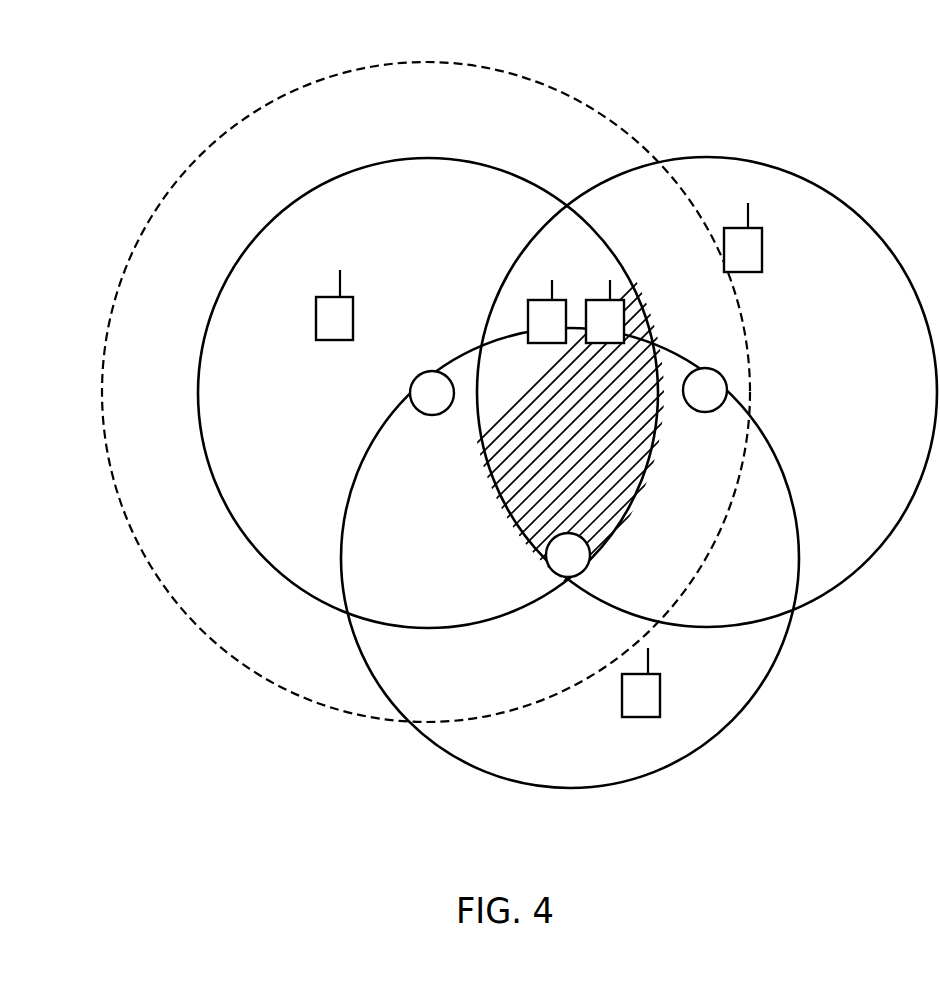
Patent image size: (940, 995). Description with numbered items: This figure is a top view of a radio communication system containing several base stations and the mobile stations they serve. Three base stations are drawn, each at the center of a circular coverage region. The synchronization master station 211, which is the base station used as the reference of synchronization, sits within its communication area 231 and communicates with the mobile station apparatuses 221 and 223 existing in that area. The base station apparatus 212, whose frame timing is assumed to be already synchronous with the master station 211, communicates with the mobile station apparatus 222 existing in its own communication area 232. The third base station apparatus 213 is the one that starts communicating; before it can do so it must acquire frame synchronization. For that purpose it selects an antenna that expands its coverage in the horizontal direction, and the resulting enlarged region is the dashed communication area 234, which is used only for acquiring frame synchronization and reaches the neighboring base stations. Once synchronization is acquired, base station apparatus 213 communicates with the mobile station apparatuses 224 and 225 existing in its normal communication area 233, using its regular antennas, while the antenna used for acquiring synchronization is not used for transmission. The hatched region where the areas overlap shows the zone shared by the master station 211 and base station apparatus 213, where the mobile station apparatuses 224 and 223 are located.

The synchronization master station 211 is at (712, 412).
The base station apparatus 212 is at (546, 566).
The base station apparatus 213 is at (421, 414).
The mobile station apparatus 221 is at (792, 242).
The mobile station apparatus 222 is at (690, 680).
The mobile station apparatus 223 is at (618, 300).
The mobile station apparatus 224 is at (532, 300).
The mobile station apparatus 225 is at (353, 318).
The communication area 231 is at (862, 216).
The communication area 232 is at (770, 666).
The cell (coverage area of base station 213) 233 is at (476, 143).
The communication area 234 is at (560, 96).